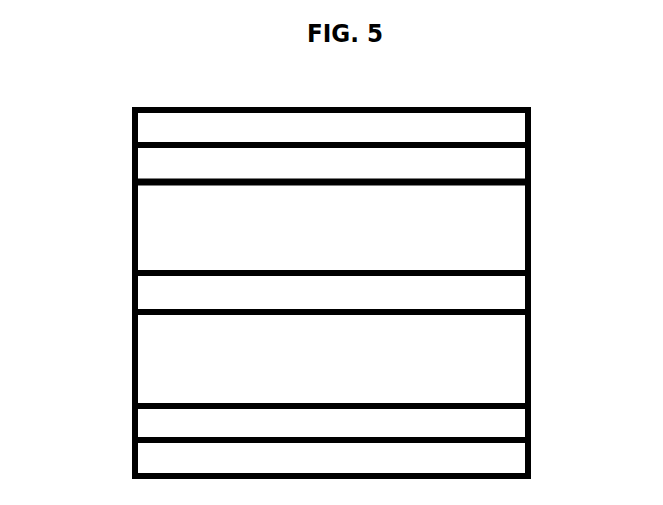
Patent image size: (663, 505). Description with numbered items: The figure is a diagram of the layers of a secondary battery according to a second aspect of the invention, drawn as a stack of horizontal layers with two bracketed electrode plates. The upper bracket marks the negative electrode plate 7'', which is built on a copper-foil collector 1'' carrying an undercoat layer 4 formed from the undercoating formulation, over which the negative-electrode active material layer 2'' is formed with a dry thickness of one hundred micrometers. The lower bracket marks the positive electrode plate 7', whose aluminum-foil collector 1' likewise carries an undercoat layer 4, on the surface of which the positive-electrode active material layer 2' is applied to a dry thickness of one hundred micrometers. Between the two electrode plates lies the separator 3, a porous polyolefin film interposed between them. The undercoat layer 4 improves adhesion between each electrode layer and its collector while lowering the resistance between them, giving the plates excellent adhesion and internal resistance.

The copper-foil collector 1'' is at (391, 134).
The collector 1' is at (389, 458).
The active material layer 2'' is at (391, 248).
The active material layer 2' is at (389, 370).
The separator 3 is at (515, 287).
The undercoat layer 4 is at (515, 163).
The negative electrode plate 7'' is at (280, 191).
The positive electrode plate 7' is at (280, 394).